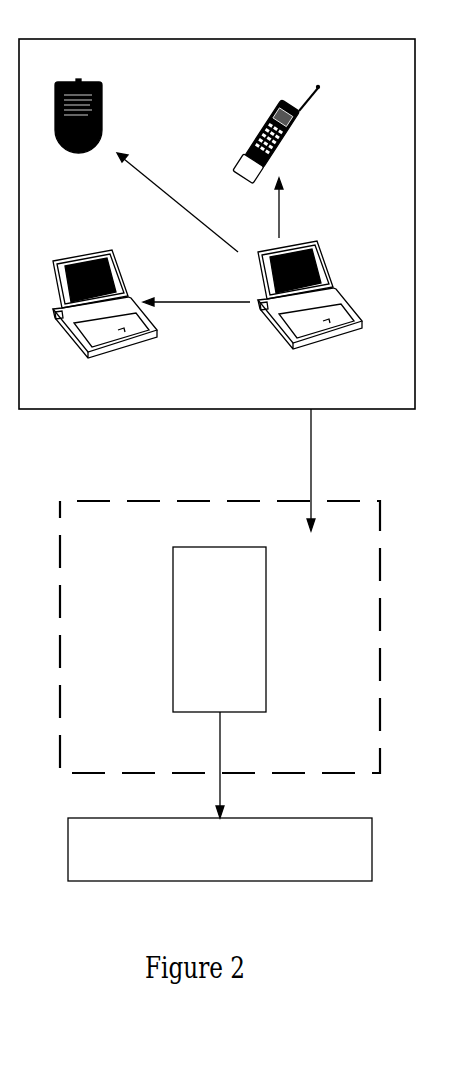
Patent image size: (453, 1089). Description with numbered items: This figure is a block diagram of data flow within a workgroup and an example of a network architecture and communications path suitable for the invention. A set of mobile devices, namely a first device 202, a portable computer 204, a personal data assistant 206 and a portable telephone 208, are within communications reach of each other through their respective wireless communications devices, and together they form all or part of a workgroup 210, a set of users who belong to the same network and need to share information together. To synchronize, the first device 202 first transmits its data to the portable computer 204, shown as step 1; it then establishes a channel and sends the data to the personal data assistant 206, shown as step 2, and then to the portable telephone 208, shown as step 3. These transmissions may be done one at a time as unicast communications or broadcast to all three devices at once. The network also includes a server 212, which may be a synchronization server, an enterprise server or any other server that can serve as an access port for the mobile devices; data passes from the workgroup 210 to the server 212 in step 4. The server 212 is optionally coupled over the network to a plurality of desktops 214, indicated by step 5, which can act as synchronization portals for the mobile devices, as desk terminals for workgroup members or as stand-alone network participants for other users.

The workgroup 210 is at (353, 38).
The first device 202 is at (340, 254).
The portable computer 204 is at (66, 356).
The personal data assistant 206 is at (111, 115).
The portable telephone 208 is at (293, 140).
The server 212 is at (263, 591).
The desktops 214 is at (333, 881).
The communication step 1 (laptop to laptop) 1 is at (196, 294).
The communication step 2 (laptop to PDA) 2 is at (177, 202).
The communication step 3 (laptop to mobile phone) 3 is at (288, 208).
The communication step 4 (workgroup to server) 4 is at (326, 470).
The communication step 5 (server to desktop) 5 is at (228, 765).